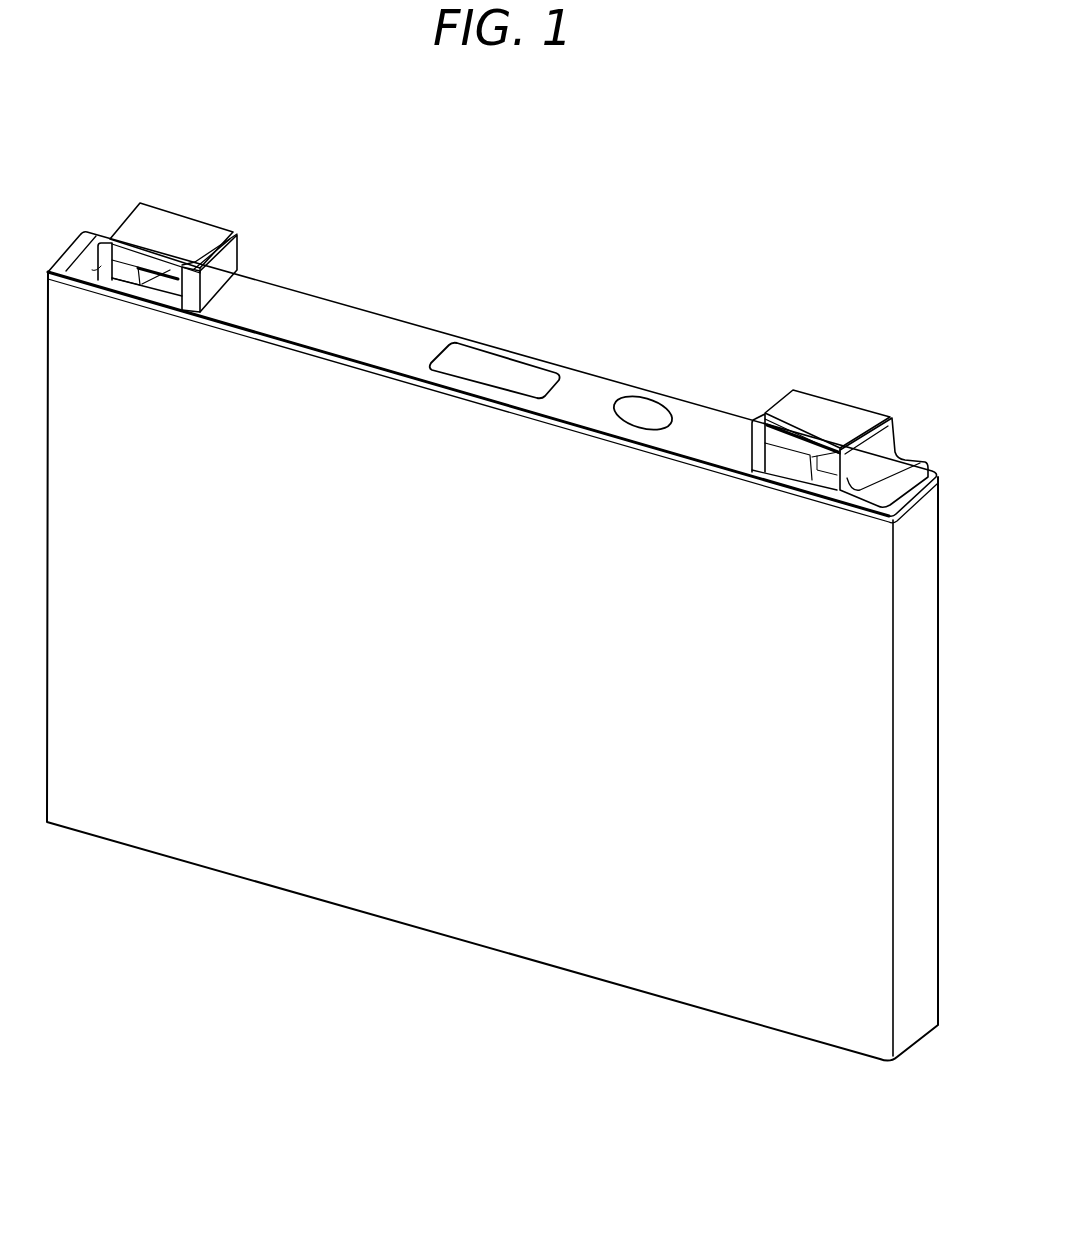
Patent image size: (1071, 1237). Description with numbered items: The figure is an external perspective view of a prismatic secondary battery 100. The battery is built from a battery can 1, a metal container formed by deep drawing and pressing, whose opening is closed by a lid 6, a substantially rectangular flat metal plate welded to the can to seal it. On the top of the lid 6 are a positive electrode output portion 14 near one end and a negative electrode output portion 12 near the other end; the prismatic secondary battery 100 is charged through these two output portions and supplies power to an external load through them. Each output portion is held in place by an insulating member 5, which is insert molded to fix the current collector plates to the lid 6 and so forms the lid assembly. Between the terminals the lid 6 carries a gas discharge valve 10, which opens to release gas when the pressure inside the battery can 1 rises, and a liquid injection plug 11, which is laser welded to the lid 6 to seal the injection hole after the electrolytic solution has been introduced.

The prismatic secondary battery 100 is at (843, 232).
The battery can 1 is at (317, 832).
The lid 6 is at (337, 322).
The gas discharge valve 10 is at (497, 368).
The liquid injection plug 11 is at (647, 413).
The positive electrode output portion 14 is at (168, 233).
The negative electrode output portion 12 is at (828, 415).
The insulating member 5 is at (226, 262).